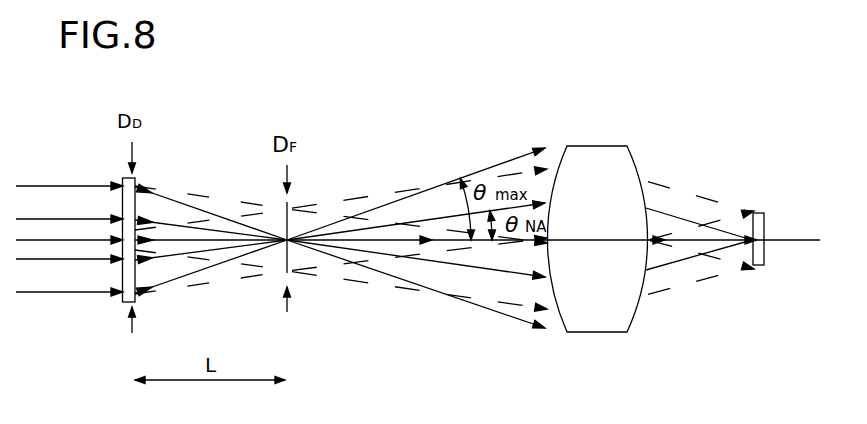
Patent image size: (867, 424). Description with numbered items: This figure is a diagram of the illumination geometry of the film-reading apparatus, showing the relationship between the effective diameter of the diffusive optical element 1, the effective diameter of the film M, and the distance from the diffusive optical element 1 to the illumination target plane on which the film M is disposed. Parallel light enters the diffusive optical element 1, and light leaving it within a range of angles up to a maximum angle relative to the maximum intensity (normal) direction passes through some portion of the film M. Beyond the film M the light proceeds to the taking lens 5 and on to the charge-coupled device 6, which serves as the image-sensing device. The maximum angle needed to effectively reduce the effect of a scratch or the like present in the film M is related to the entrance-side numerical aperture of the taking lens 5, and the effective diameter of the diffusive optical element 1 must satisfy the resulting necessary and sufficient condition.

The diffusive optical element 1 is at (122, 302).
The taking lens 5 is at (602, 333).
The charge-coupled device 6 is at (765, 255).
The film M is at (290, 274).